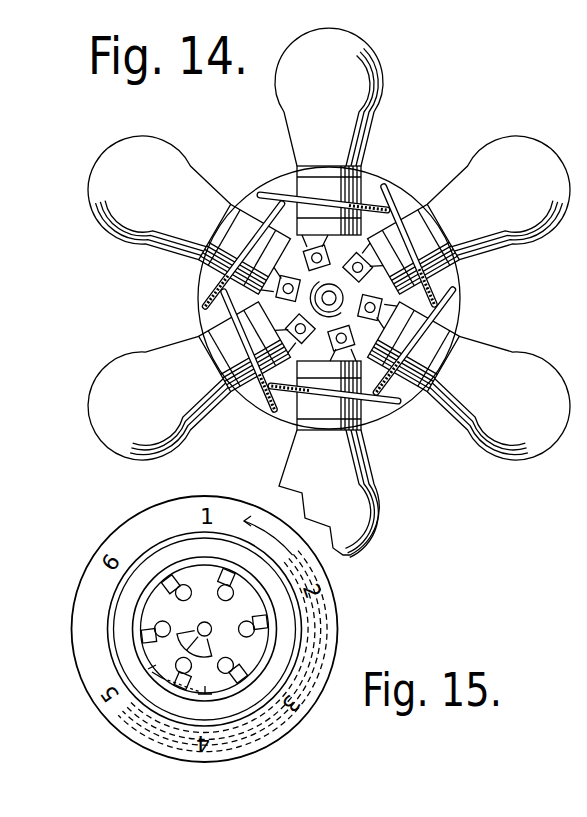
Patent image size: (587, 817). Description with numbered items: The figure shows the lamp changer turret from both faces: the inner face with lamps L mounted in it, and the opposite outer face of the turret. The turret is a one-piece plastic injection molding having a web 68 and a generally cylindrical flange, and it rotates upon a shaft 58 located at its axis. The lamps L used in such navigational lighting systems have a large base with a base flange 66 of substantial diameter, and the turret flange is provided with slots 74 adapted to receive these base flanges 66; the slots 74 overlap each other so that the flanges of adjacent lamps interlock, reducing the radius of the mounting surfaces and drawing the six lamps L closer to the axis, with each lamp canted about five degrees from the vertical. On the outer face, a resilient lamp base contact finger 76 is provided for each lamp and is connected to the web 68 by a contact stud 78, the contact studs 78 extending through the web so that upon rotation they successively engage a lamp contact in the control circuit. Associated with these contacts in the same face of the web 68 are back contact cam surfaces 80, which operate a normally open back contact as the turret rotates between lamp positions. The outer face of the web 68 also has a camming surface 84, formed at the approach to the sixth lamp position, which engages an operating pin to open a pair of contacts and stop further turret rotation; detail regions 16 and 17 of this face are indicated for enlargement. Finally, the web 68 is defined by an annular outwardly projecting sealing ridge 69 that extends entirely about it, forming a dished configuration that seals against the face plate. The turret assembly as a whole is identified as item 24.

In FIG. 14, the rotary carrier disc 24 is at (385, 168).
In FIG. 15, the rotary carrier disc 24 is at (338, 607).
In FIG. 14, the turret shaft 58 is at (324, 293).
In FIG. 14, the lamp bulb L is at (372, 79).
In FIG. 14, the lamp base contact finger 76 is at (372, 279).
In FIG. 14, the slots 74 is at (402, 393).
In FIG. 14, the base flange 66 is at (204, 294).
In FIG. 15, the sealing ridge 69 is at (258, 588).
In FIG. 15, the back contact cam surfaces 80 is at (162, 579).
In FIG. 15, the web 68 is at (262, 640).
In FIG. 15, the contact studs 78 is at (170, 628).
In FIG. 15, the camming surface 84 is at (174, 637).
In FIG. 15, the center pivot 16 is at (192, 617).
In FIG. 15, the index mark 17 is at (176, 695).